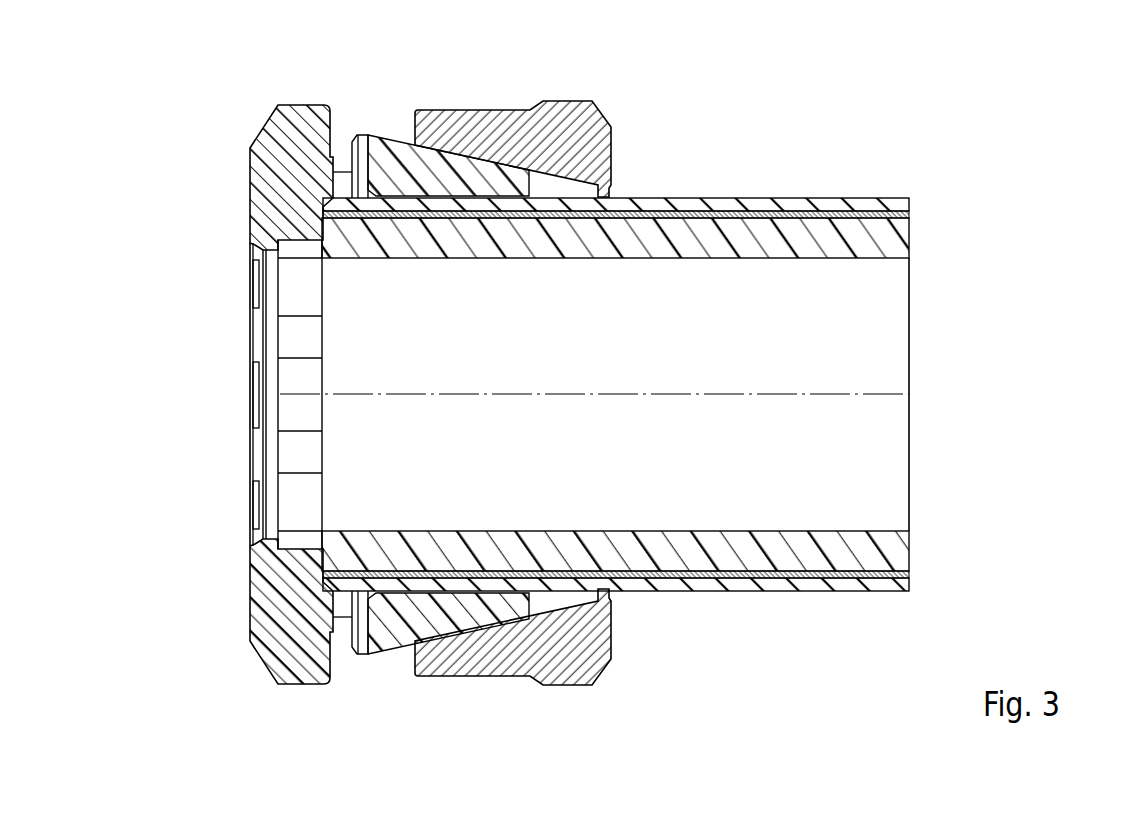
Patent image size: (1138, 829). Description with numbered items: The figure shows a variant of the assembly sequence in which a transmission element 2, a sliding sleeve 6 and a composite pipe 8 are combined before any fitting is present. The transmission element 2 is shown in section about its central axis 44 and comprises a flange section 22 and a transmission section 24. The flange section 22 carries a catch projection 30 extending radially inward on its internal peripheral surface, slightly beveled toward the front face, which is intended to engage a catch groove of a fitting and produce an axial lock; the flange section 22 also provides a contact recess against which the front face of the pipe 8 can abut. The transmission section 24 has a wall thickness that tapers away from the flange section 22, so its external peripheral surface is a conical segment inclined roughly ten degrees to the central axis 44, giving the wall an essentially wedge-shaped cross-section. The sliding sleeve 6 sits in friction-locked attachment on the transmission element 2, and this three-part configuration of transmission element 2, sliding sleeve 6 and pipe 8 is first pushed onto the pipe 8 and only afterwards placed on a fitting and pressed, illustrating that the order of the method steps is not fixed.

The transmission element 2 is at (346, 123).
The sliding sleeve 6 is at (637, 87).
The composite pipe 8 is at (887, 177).
The flange section 22 is at (323, 698).
The transmission section 24 is at (397, 672).
The catch projection 30 is at (273, 245).
The central axis 44 is at (580, 394).